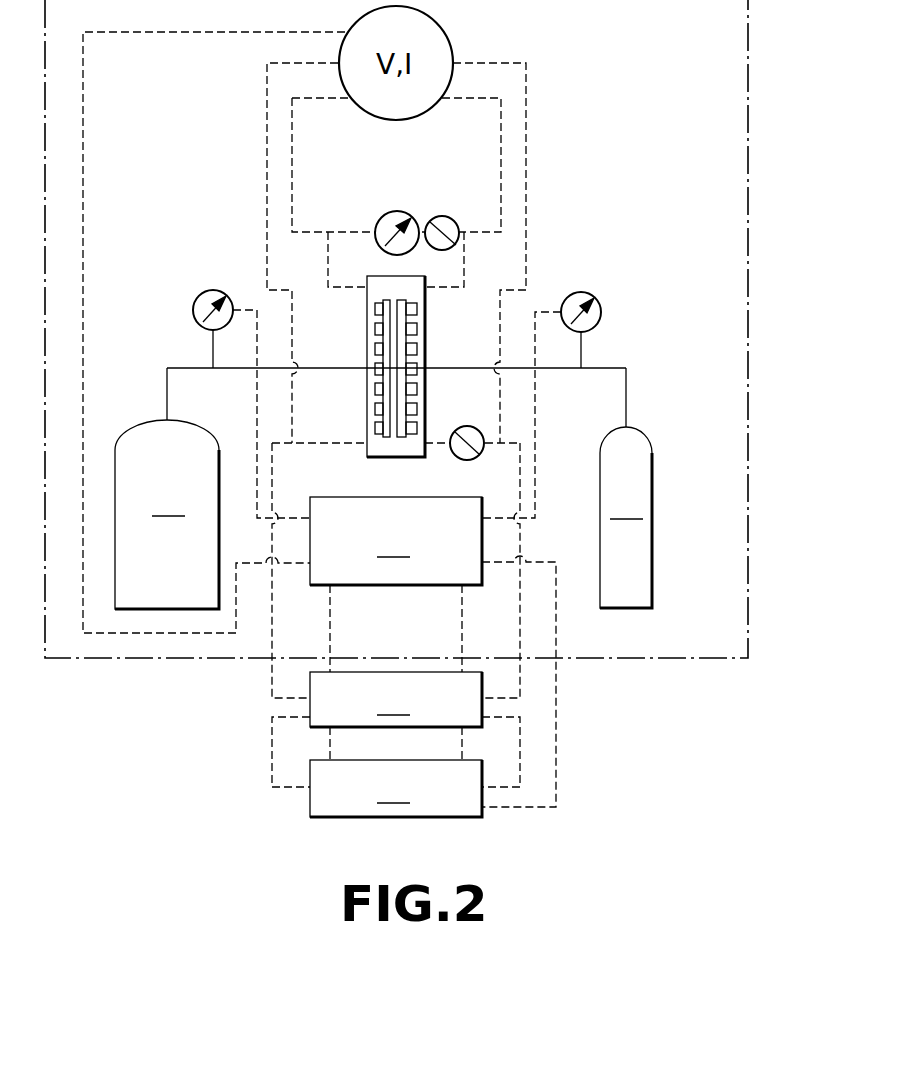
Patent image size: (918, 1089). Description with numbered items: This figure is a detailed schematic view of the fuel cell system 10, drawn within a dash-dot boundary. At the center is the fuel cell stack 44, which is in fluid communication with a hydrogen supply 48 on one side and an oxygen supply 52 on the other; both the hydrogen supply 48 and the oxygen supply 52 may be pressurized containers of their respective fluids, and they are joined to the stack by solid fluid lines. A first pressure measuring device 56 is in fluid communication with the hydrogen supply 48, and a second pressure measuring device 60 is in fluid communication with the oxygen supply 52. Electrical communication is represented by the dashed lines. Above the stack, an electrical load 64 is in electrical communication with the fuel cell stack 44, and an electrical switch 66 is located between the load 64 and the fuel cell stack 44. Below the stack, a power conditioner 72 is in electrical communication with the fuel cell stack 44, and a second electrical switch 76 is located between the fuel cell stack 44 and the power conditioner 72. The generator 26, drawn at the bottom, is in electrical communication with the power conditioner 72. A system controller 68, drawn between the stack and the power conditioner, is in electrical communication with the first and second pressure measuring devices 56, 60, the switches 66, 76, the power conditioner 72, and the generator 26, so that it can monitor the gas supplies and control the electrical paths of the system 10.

The fuel cell system 10 is at (749, 332).
The generator 26 is at (396, 788).
The fuel cell stack 44 is at (366, 336).
The hydrogen supply 48 is at (167, 514).
The oxygen supply 52 is at (626, 517).
The first pressure measuring device 56 is at (200, 298).
The second pressure measuring device 60 is at (595, 299).
The electrical load 64 is at (381, 221).
The electrical switch 66 is at (441, 216).
The system controller 68 is at (396, 541).
The power conditioner 72 is at (396, 699).
The electrical switch 76 is at (463, 427).